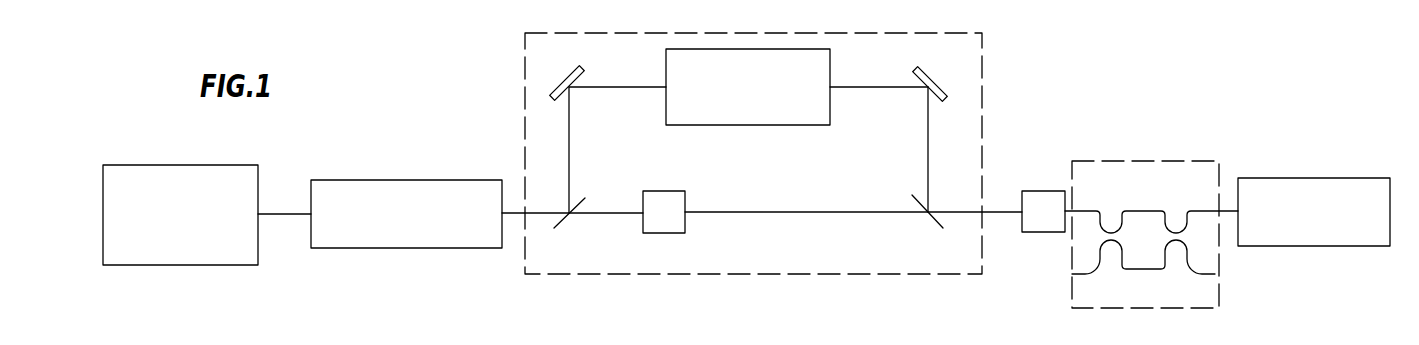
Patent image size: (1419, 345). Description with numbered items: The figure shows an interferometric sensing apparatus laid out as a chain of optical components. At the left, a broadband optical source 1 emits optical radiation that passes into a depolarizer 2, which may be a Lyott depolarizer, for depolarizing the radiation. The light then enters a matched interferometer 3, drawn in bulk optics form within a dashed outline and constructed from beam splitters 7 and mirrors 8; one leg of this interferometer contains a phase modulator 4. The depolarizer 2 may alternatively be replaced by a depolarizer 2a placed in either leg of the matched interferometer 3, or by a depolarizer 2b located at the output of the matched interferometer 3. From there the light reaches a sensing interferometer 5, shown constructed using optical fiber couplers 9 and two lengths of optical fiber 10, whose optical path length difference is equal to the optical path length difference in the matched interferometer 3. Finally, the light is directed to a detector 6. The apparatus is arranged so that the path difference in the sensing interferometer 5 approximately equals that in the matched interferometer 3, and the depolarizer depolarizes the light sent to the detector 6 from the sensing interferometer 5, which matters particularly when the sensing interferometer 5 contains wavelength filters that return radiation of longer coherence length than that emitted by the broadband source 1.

The broadband optical source 1 is at (195, 165).
The depolarizer 2 is at (392, 180).
The depolarizer 2a is at (673, 233).
The depolarizer 2b is at (1045, 232).
The matched interferometer 3 is at (985, 56).
The phase modulator 4 is at (767, 126).
The sensing interferometer 5 is at (1178, 155).
The detector 6 is at (1330, 246).
The beam splitters 7 is at (565, 220).
The mirrors 8 is at (558, 88).
The optical fiber couplers 9 is at (1110, 258).
The lengths of optical fiber 10 is at (1145, 207).